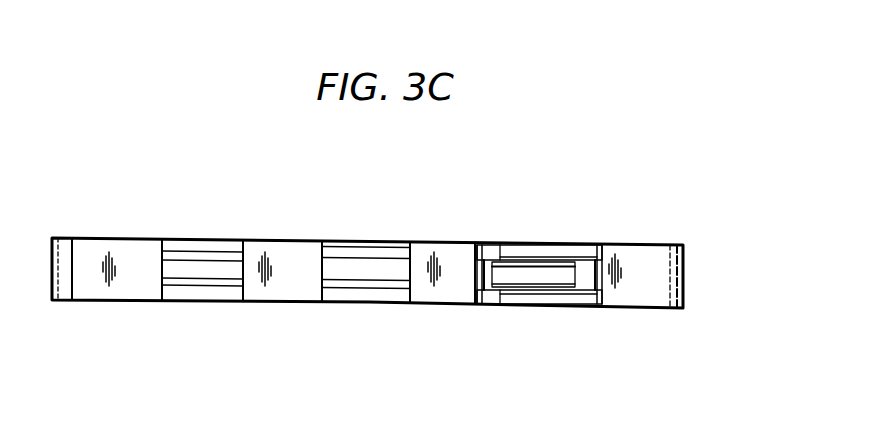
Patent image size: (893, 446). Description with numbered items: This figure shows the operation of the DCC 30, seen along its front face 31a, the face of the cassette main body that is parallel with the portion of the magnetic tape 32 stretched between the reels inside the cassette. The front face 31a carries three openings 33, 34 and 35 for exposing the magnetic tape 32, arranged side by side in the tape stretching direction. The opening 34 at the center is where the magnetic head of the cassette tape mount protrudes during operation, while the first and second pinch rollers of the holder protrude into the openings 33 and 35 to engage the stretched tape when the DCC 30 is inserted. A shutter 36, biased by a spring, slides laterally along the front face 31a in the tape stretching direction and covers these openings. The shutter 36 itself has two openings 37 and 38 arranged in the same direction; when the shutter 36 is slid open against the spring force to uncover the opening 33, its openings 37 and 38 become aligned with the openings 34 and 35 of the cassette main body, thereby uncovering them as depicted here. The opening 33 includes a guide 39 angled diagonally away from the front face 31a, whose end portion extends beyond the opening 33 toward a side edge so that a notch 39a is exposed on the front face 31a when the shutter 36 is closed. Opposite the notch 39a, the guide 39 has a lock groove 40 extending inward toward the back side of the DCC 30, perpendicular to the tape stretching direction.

The DCC 30 is at (649, 236).
The front face 31a is at (667, 281).
The magnetic tape 32 is at (553, 276).
The opening 33 is at (508, 296).
The opening 34 is at (378, 293).
The opening 35 is at (213, 284).
The shutter 36 is at (283, 256).
The opening 37 is at (367, 243).
The opening 38 is at (185, 241).
The guide 39 is at (527, 246).
The notch 39a is at (585, 246).
The lock groove 40 is at (484, 244).